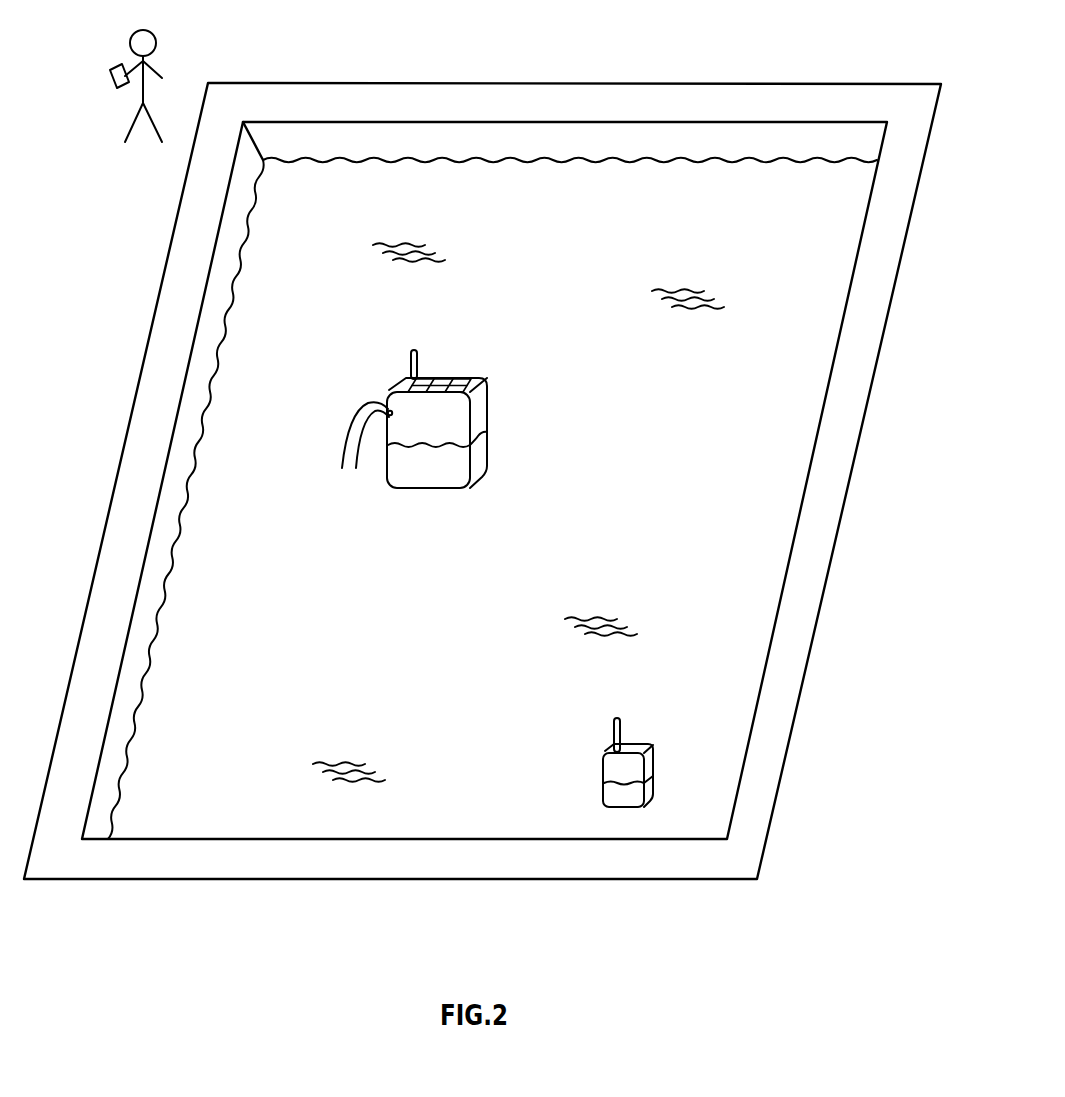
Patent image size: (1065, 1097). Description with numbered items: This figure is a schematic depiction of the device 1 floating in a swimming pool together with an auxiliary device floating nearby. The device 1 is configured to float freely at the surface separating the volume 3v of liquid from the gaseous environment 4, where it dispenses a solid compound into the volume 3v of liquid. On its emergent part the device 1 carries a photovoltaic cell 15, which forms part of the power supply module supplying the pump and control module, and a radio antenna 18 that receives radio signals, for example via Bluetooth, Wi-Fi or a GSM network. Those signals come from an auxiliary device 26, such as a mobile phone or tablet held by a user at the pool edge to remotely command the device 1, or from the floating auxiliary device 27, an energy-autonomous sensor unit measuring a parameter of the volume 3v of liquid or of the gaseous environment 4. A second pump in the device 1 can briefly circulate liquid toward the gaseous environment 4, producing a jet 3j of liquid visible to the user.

The auxiliary device 26 is at (116, 70).
The gaseous environment 4 is at (114, 362).
The device 1 is at (404, 396).
The radio antenna 18 is at (417, 349).
The photovoltaic cell 15 is at (453, 378).
The jet of liquid 3j is at (343, 438).
The volume of liquid 3v is at (291, 587).
The floating auxiliary device 27 is at (584, 762).